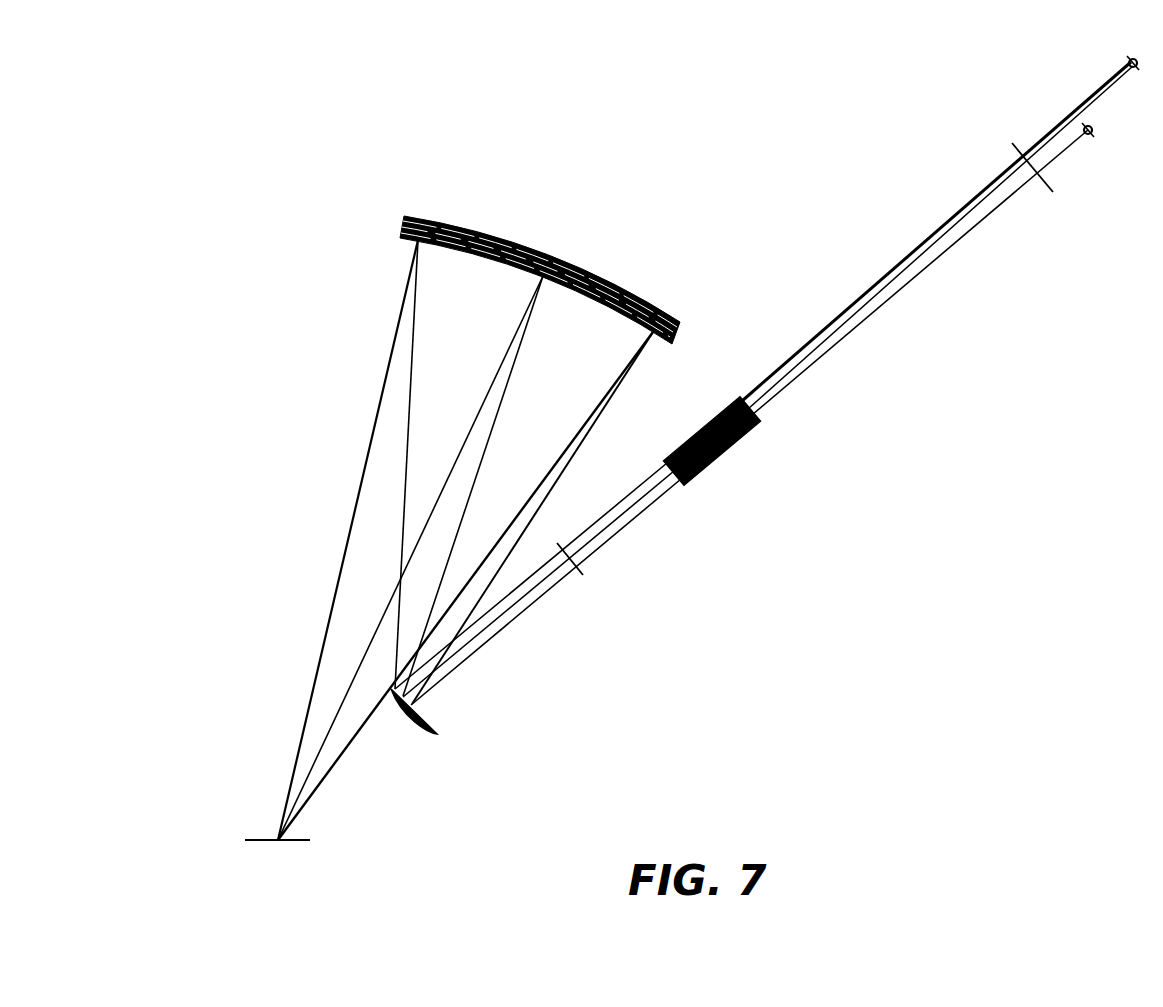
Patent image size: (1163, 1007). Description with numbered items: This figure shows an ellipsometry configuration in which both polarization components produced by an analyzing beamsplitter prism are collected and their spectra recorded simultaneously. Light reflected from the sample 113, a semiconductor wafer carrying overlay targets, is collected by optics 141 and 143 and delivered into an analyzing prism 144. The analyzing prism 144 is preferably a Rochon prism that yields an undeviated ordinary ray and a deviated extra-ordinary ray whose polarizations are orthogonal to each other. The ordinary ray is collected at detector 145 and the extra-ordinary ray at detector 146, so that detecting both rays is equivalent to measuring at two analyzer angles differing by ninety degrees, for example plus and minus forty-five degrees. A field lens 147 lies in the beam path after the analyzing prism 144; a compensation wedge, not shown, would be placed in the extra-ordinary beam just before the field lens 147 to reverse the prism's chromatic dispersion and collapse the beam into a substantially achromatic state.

The sample 113 is at (262, 824).
The collection optics 141 is at (469, 210).
The collection optics 143 is at (446, 705).
The analyzing prism 144 is at (758, 452).
The detector 145 is at (1114, 52).
The detector 146 is at (1090, 158).
The field lens 147 is at (996, 157).